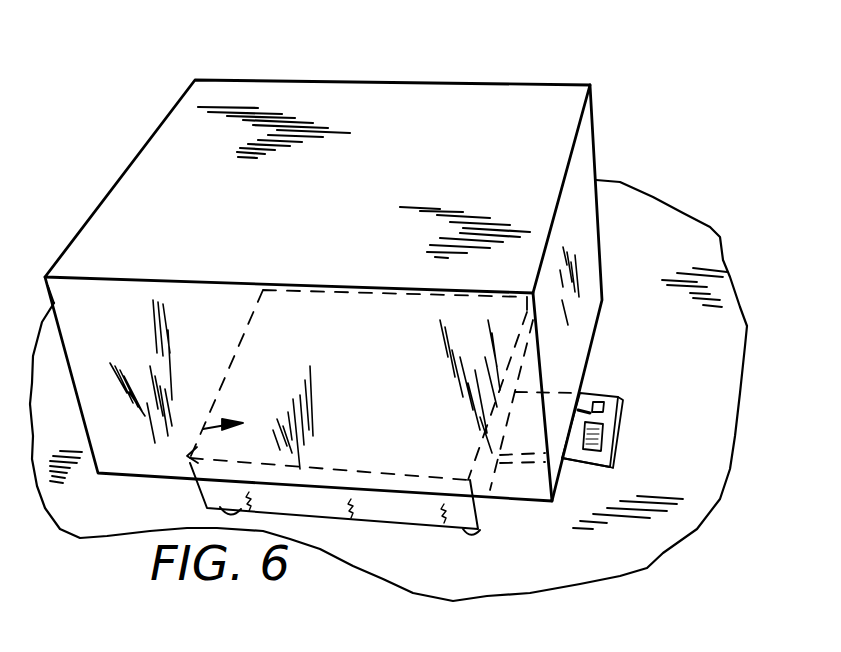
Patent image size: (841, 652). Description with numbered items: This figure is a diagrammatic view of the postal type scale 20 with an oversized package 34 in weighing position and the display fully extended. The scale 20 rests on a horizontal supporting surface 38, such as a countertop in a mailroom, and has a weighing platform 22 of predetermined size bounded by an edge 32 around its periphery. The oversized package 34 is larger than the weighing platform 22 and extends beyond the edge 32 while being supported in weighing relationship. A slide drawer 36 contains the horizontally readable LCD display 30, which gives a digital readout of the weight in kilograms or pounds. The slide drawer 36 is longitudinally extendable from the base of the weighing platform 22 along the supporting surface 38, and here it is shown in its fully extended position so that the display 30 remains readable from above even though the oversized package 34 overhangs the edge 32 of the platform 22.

The postal type scale 20 is at (198, 432).
The weighing platform 22 is at (493, 333).
The LCD display 30 is at (588, 476).
The edge 32 is at (482, 507).
The oversized package 34 is at (473, 103).
The slide drawer 36 is at (587, 392).
The horizontal supporting surface 38 is at (660, 215).